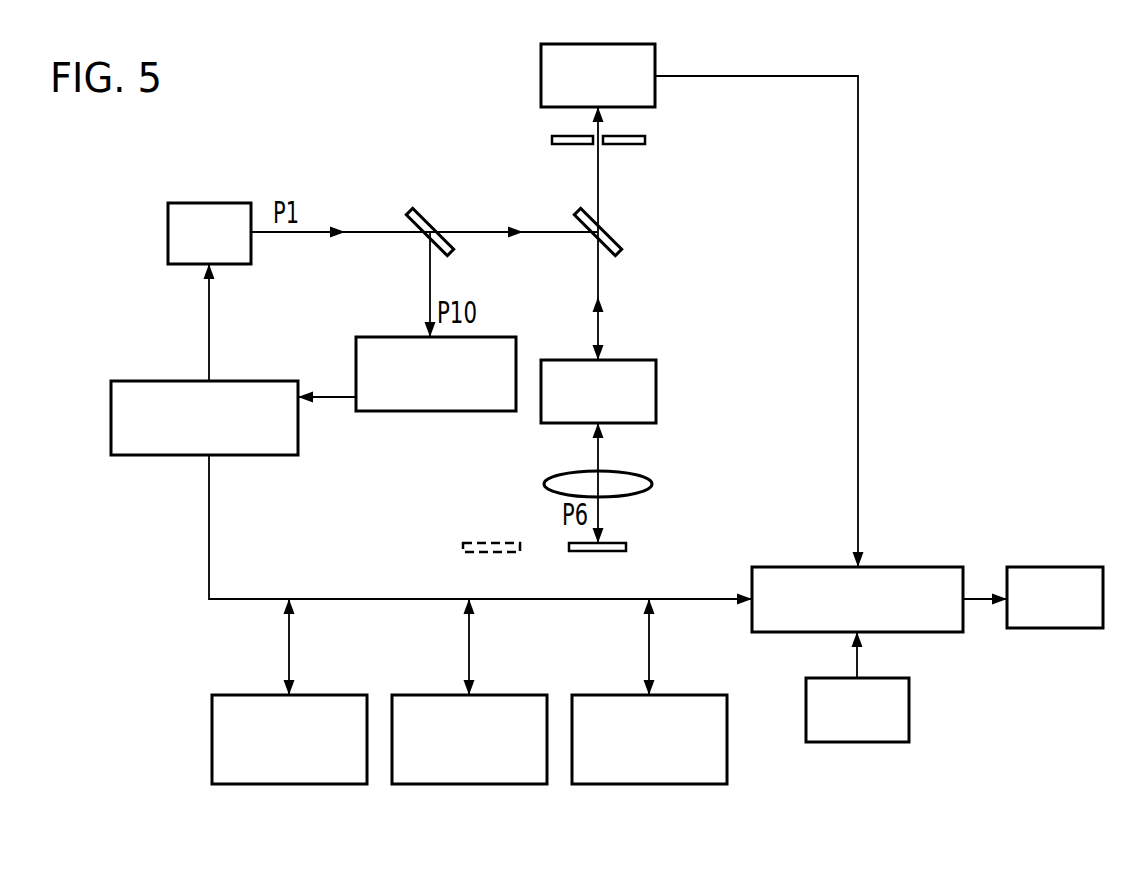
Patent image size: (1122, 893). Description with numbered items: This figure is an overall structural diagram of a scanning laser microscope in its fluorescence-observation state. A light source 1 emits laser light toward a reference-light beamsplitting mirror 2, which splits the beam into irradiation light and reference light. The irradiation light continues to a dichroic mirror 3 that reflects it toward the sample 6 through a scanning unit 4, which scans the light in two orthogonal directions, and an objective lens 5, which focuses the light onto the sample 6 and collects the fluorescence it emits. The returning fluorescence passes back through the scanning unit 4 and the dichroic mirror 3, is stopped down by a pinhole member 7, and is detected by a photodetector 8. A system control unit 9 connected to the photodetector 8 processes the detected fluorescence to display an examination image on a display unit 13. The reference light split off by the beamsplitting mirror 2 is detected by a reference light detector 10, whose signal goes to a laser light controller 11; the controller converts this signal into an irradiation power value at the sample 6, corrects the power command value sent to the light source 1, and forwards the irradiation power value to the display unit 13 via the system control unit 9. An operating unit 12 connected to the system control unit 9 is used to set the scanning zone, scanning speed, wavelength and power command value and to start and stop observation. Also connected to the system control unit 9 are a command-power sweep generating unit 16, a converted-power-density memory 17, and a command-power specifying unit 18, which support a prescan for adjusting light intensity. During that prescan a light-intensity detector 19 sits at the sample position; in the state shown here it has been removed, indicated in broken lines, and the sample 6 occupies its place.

The light source 1 is at (211, 203).
The reference-light beamsplitting mirror 2 is at (421, 207).
The dichroic mirror 3 is at (618, 237).
The scanning unit 4 is at (642, 360).
The objective lens 5 is at (633, 473).
The sample 6 is at (627, 545).
The pinhole member 7 is at (636, 146).
The photodetector 8 is at (655, 60).
The system control unit 9 is at (913, 567).
The reference light detector 10 is at (401, 412).
The laser light controller 11 is at (145, 380).
The operating unit 12 is at (910, 709).
The display unit 13 is at (1057, 567).
The command-power sweep generating unit 16 is at (287, 785).
The converted-power-density memory 17 is at (472, 785).
The command-power specifying unit 18 is at (650, 785).
The light-intensity detector 19 is at (490, 543).